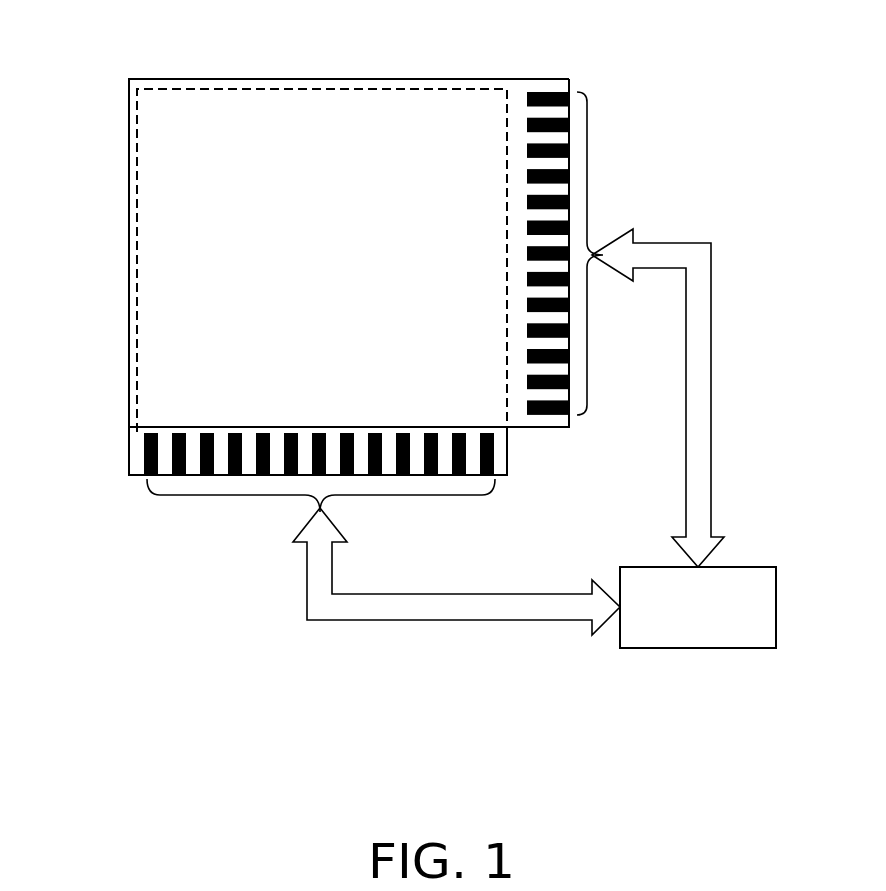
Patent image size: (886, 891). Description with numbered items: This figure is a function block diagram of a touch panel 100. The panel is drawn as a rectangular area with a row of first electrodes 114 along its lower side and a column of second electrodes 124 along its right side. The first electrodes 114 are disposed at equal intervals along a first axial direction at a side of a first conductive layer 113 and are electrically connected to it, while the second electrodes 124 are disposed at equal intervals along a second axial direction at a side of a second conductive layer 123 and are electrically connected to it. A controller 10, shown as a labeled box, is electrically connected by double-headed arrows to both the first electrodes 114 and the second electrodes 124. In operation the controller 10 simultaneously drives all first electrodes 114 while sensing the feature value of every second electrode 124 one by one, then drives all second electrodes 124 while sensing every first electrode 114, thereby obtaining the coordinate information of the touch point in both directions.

The touch panel 100 is at (129, 190).
The second electrodes 124 is at (547, 92).
The second conductive layer 123 is at (545, 427).
The first electrodes 114 is at (144, 452).
The first conductive layer 113 is at (507, 452).
The controller 10 is at (695, 648).